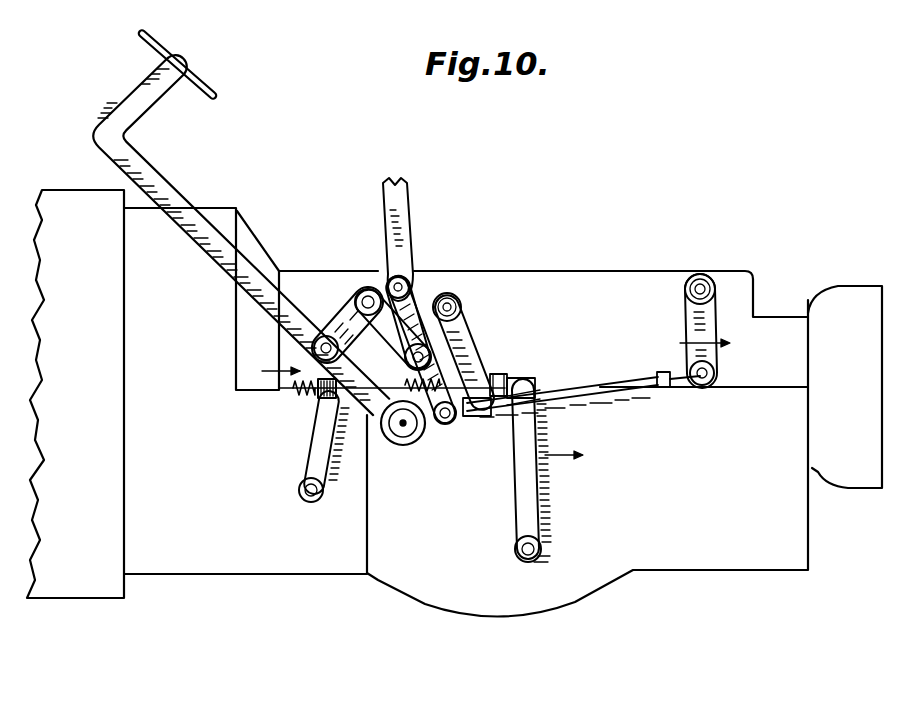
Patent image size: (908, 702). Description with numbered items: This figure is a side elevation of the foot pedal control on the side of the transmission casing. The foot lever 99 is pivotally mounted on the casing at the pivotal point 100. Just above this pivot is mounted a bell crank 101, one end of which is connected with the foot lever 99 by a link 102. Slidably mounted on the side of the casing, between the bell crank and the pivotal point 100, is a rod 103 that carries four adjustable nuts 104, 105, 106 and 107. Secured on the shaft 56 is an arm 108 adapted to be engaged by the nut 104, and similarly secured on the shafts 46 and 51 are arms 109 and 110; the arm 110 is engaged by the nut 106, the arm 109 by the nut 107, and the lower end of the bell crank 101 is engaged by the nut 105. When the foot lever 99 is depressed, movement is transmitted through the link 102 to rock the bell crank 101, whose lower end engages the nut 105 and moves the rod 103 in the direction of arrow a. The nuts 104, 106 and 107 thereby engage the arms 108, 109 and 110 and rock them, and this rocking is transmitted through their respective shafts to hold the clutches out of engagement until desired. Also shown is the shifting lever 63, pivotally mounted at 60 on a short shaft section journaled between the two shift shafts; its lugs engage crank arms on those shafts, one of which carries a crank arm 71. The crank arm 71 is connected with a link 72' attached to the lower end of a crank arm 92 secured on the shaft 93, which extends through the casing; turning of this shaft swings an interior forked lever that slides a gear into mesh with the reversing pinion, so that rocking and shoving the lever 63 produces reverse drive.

The foot lever 99 is at (163, 188).
The shifting lever 63 is at (405, 218).
The pivot 60 is at (396, 285).
The bell crank 101 is at (413, 330).
The crank arm 71 is at (422, 313).
The shaft 51 is at (456, 296).
The arm 110 is at (467, 343).
The link 102 is at (332, 330).
The rod 103 is at (393, 380).
The adjustable nut 104 is at (297, 396).
The arrow a is at (271, 364).
The arm 108 is at (318, 437).
The shaft 56 is at (304, 506).
The pivotal point 100 is at (402, 436).
The adjustable nut 105 is at (445, 426).
The adjustable nut 106 is at (482, 418).
The adjustable nut 107 is at (505, 366).
The link 72' is at (583, 408).
The arm 109 is at (548, 516).
The shaft 46 is at (556, 547).
The crank arm 92 is at (706, 337).
The shaft 93 is at (701, 287).